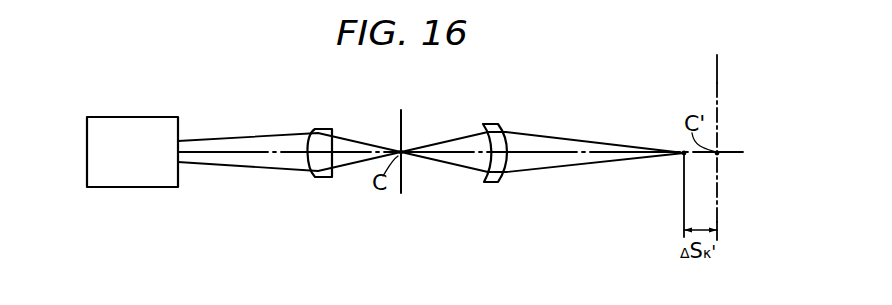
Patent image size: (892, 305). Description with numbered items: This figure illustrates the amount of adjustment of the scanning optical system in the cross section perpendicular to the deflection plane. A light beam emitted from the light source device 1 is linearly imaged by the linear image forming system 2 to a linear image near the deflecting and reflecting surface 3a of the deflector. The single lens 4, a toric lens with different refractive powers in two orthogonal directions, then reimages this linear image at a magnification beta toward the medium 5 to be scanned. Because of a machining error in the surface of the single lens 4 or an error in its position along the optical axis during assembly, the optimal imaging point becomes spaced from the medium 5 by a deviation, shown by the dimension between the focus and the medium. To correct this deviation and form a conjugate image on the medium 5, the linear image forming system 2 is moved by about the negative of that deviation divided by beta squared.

The light source device 1 is at (142, 117).
The linear image forming system 2 is at (320, 129).
The deflecting and reflecting surface 3a is at (401, 123).
The single lens 4 is at (491, 124).
The medium to be scanned 5 is at (717, 78).